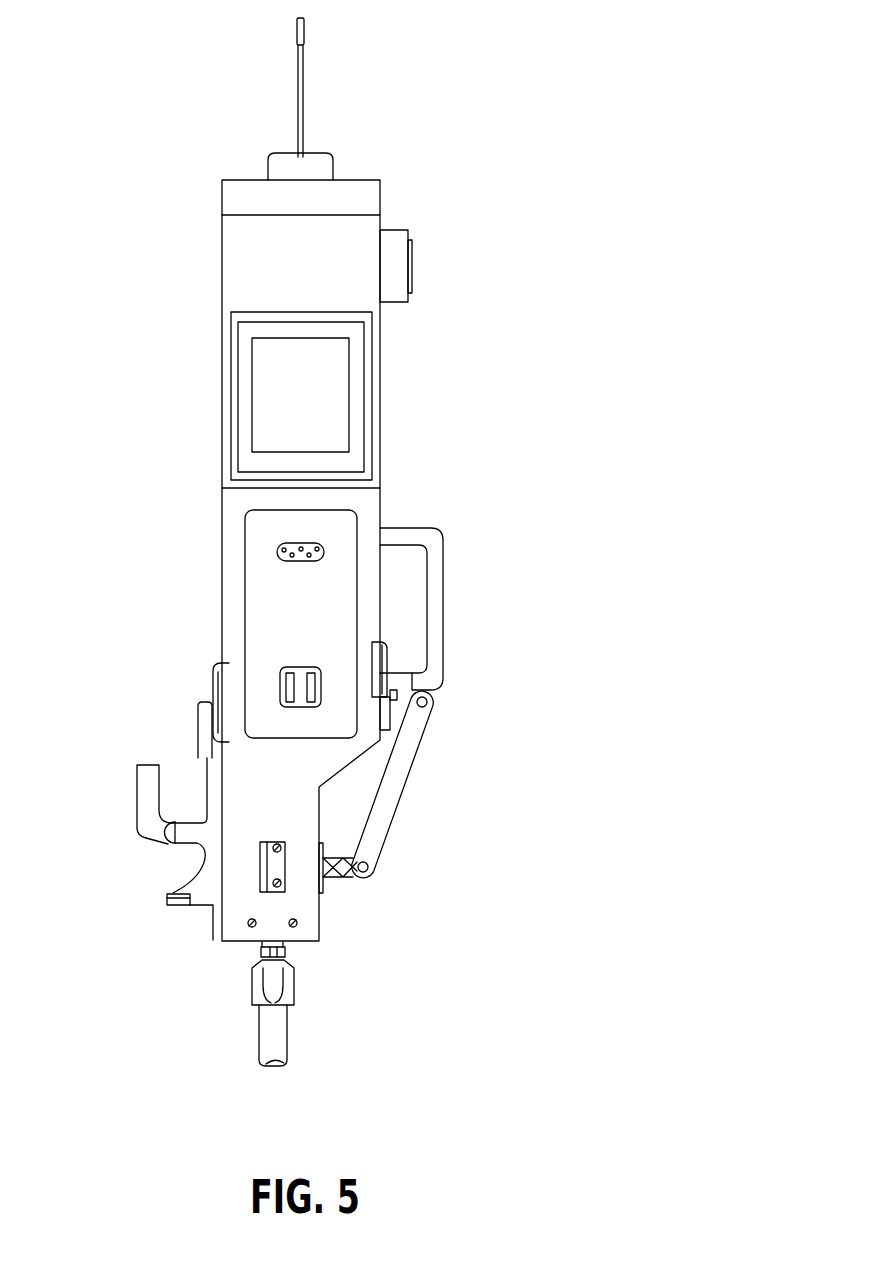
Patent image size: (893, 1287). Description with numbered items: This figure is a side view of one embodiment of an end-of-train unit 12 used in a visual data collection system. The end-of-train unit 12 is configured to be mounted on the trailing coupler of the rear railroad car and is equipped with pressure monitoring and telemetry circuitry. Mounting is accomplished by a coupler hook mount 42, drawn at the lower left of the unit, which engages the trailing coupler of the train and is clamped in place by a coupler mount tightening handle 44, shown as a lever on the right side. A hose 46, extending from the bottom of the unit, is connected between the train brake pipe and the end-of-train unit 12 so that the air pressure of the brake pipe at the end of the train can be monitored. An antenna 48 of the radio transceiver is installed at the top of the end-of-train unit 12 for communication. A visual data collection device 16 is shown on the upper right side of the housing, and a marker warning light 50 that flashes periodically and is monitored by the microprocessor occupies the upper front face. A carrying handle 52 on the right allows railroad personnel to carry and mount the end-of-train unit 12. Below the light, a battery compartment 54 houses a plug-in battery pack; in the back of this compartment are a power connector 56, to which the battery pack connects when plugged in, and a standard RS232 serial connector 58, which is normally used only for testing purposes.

The end-of-train unit 12 is at (168, 357).
The visual data collection device 16 is at (395, 230).
The coupler hook mount 42 is at (137, 803).
The coupler mount tightening handle 44 is at (422, 745).
The hose 46 is at (285, 1035).
The antenna 48 is at (303, 97).
The marker warning light 50 is at (350, 407).
The carrying handle 52 is at (443, 563).
The battery compartment 54 is at (303, 608).
The power connector 56 is at (279, 688).
The RS232 serial connector 58 is at (277, 548).